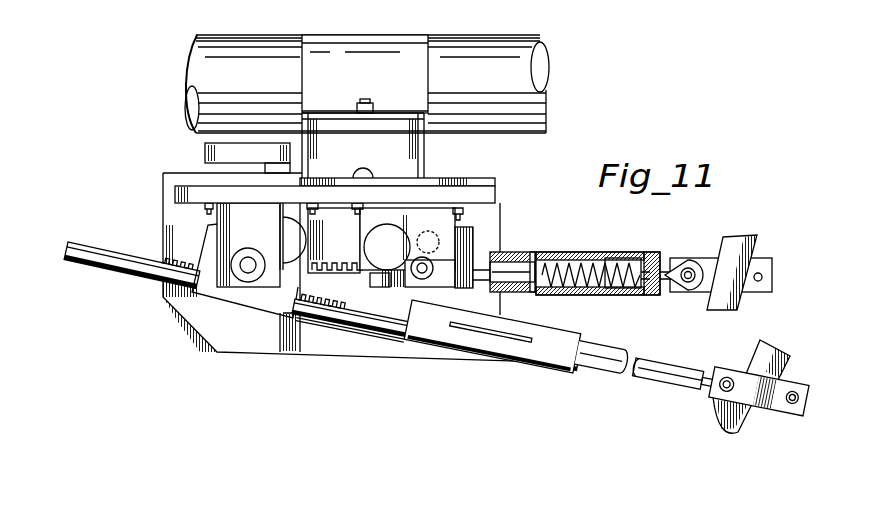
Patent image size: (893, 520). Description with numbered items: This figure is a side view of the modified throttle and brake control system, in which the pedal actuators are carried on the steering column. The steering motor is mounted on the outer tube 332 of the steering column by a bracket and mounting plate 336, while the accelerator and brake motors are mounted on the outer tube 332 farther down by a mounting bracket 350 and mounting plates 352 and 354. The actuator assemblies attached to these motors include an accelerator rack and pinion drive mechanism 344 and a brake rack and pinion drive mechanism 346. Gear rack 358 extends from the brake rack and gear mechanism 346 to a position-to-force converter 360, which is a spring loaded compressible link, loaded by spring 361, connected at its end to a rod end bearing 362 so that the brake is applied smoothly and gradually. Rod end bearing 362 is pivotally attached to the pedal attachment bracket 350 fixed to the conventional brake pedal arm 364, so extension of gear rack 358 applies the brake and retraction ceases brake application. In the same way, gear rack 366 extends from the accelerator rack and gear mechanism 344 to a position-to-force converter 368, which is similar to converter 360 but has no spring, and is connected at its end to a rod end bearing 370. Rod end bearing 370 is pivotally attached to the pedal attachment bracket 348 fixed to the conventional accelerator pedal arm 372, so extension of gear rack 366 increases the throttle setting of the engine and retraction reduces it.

The outer tube 332 is at (522, 83).
The mounting plate 336 is at (205, 152).
The rack and pinion drive mechanism 344 is at (207, 250).
The rack and pinion drive mechanism 346 is at (377, 283).
The pedal attachment bracket 348 is at (717, 397).
The mounting bracket 350 is at (427, 38).
The mounting plate 352 is at (410, 176).
The mounting plate 354 is at (480, 182).
The gear rack 358 is at (484, 262).
The position-to-force converter 360 is at (580, 251).
The spring 361 is at (598, 293).
The rod end bearing 362 is at (685, 290).
The brake pedal arm 364 is at (727, 247).
The gear rack 366 is at (306, 310).
The position-to-force converter 368 is at (520, 366).
The rod end bearing 370 is at (712, 365).
The accelerator pedal arm 372 is at (767, 358).